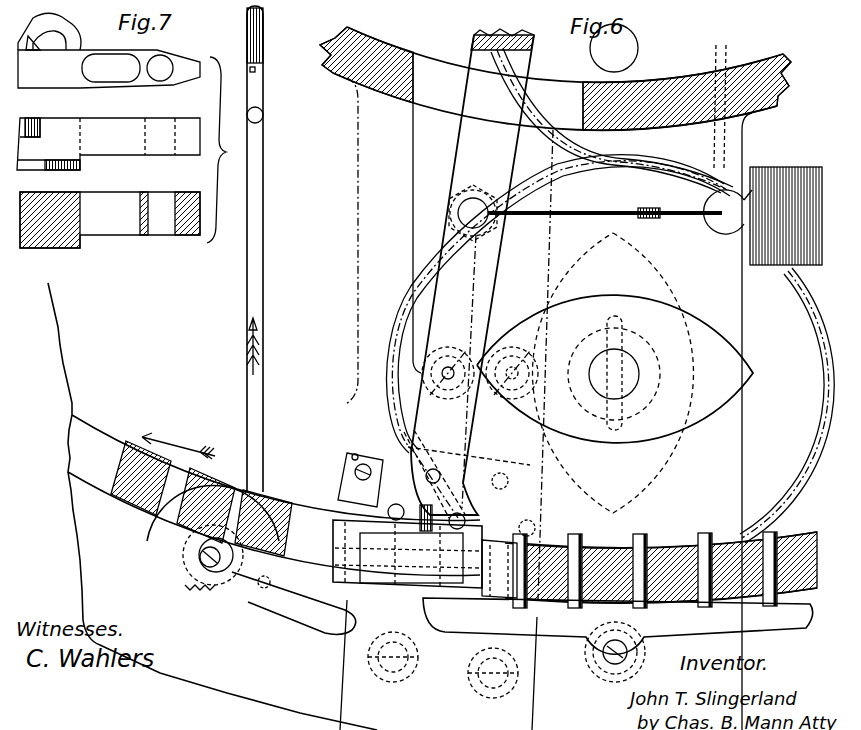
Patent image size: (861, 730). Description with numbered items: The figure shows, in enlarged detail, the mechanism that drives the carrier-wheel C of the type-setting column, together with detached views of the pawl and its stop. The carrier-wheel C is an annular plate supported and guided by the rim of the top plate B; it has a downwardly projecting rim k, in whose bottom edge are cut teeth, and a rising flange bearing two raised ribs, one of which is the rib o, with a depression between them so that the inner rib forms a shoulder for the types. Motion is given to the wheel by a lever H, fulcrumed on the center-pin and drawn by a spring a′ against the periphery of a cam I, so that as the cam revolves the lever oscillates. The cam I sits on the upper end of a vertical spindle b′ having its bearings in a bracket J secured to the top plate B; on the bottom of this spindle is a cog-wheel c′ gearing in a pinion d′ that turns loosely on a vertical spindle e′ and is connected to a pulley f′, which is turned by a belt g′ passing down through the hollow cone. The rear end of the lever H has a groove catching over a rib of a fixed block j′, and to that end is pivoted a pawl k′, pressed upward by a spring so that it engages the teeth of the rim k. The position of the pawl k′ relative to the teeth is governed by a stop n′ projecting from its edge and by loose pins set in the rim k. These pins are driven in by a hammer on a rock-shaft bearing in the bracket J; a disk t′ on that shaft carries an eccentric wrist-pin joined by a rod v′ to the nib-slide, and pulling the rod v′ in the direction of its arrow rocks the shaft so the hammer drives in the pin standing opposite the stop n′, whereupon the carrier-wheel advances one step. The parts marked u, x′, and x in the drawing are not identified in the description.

In FIG. 7, the pawl k′ is at (108, 103).
In FIG. 7, the stop n′ is at (49, 88).
In FIG. 7, the rim k is at (110, 220).
In FIG. 6, the rim k is at (661, 567).
In FIG. 6, the rod v′ is at (253, 249).
In FIG. 6, the top plate B is at (555, 78).
In FIG. 6, the vertical spindle e′ is at (614, 48).
In FIG. 6, the bracket J is at (723, 421).
In FIG. 6, the pinion d′ is at (560, 283).
In FIG. 6, the lever H is at (474, 272).
In FIG. 6, the spring a′ is at (763, 155).
In FIG. 6, the cam I is at (615, 373).
In FIG. 6, the vertical spindle b′ is at (614, 373).
In FIG. 6, the cog-wheel c′ is at (787, 405).
In FIG. 6, the carrier-wheel C is at (274, 495).
In FIG. 6, the raised rib o is at (645, 570).
In FIG. 6, the belt g′ is at (618, 640).
In FIG. 6, the fixed block j′ is at (443, 665).
In FIG. 6, the disk t′ is at (213, 553).
In FIG. 6, the pulley f′ is at (294, 603).
In FIG. 6, the pin u is at (259, 575).
In FIG. 6, the slide x′ is at (414, 514).
In FIG. 6, the small plate x is at (355, 477).